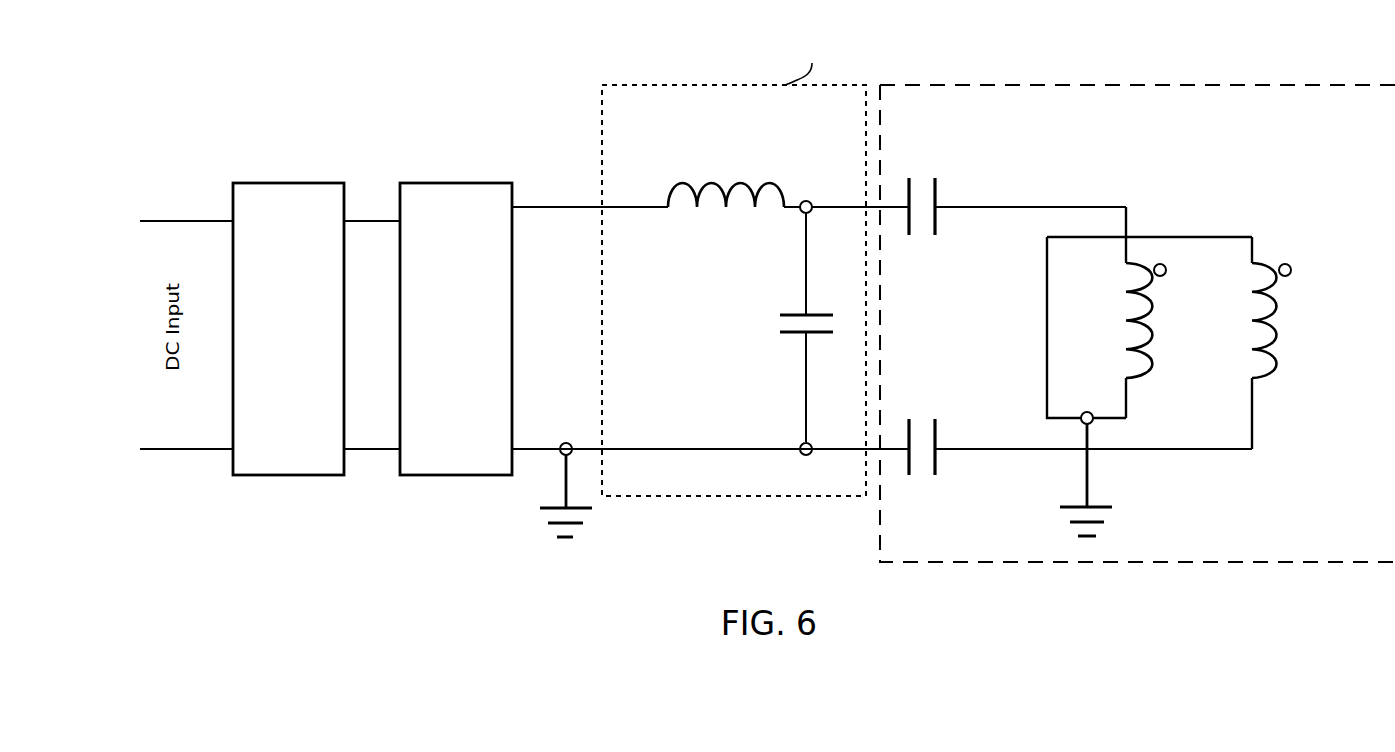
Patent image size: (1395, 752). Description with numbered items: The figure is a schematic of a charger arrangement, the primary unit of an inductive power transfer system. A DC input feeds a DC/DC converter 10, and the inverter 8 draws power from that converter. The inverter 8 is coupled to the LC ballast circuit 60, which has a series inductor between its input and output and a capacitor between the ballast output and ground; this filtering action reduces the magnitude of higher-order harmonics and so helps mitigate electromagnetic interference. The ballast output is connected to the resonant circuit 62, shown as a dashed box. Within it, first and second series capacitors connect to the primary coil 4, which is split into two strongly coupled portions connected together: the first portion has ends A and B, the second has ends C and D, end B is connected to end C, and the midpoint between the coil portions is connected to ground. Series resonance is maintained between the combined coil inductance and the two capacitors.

The DC/DC converter 10 is at (287, 183).
The inverter 8 is at (455, 183).
The LC ballast circuit 60 is at (655, 85).
The resonant circuit 62 is at (1067, 85).
The primary coil 4 is at (1320, 362).